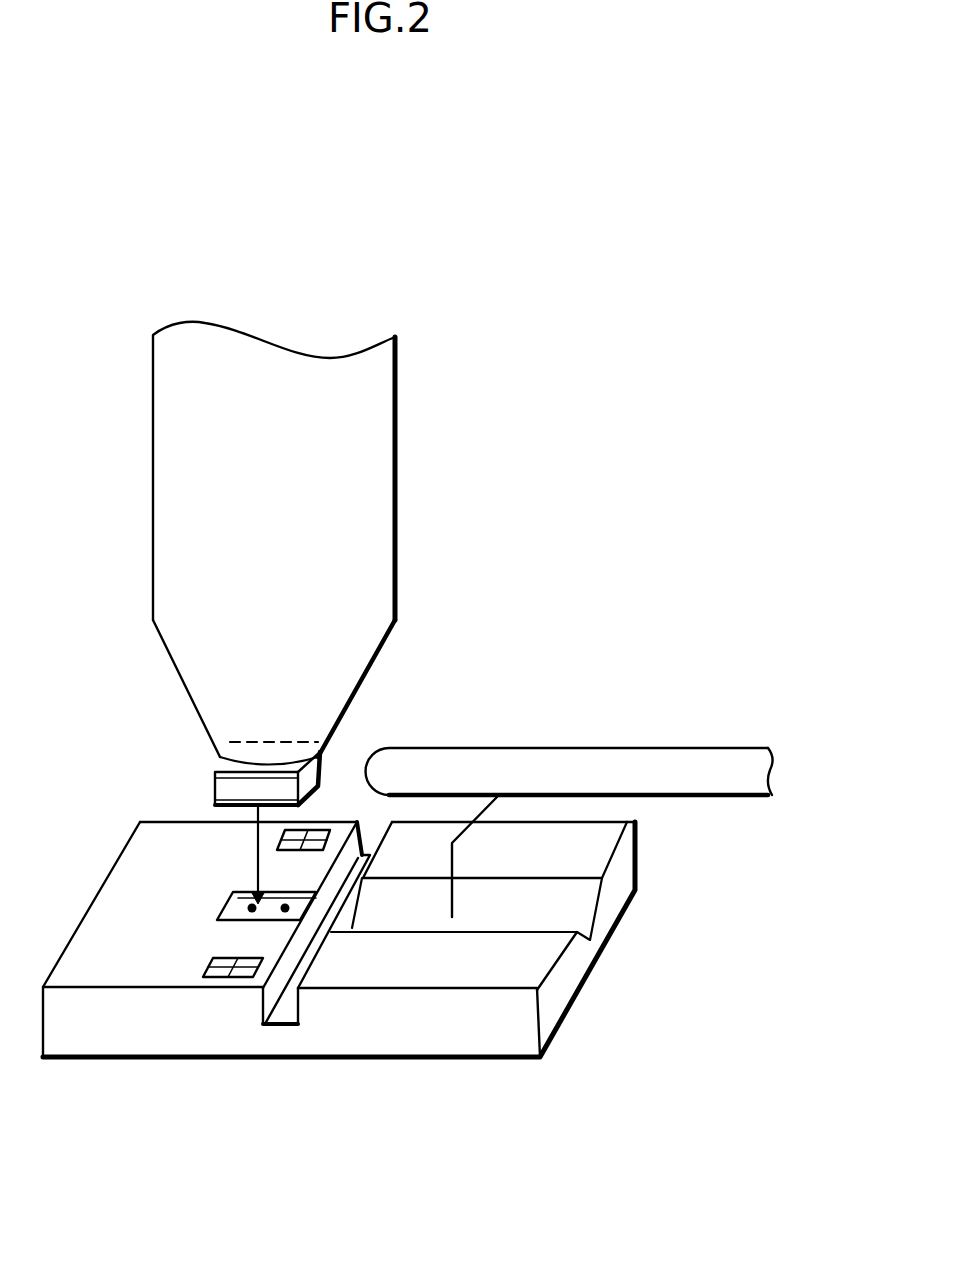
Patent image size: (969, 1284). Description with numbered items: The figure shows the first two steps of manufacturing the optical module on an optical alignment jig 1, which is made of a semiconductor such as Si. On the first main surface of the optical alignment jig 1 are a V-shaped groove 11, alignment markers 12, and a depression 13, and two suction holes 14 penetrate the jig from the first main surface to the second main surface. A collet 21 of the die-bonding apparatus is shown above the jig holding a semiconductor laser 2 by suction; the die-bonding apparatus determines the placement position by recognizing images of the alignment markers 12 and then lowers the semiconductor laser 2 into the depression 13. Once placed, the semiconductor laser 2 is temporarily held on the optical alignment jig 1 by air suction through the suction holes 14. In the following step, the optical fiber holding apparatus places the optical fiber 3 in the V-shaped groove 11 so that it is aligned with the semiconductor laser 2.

The collet 21 is at (356, 431).
The semiconductor laser 2 is at (213, 787).
The optical fiber 3 is at (652, 735).
The optical alignment jig 1 is at (372, 1033).
The V-shaped groove 11 is at (565, 912).
The alignment markers 12 is at (231, 847).
The depression 13 is at (213, 905).
The suction holes 14 is at (285, 912).